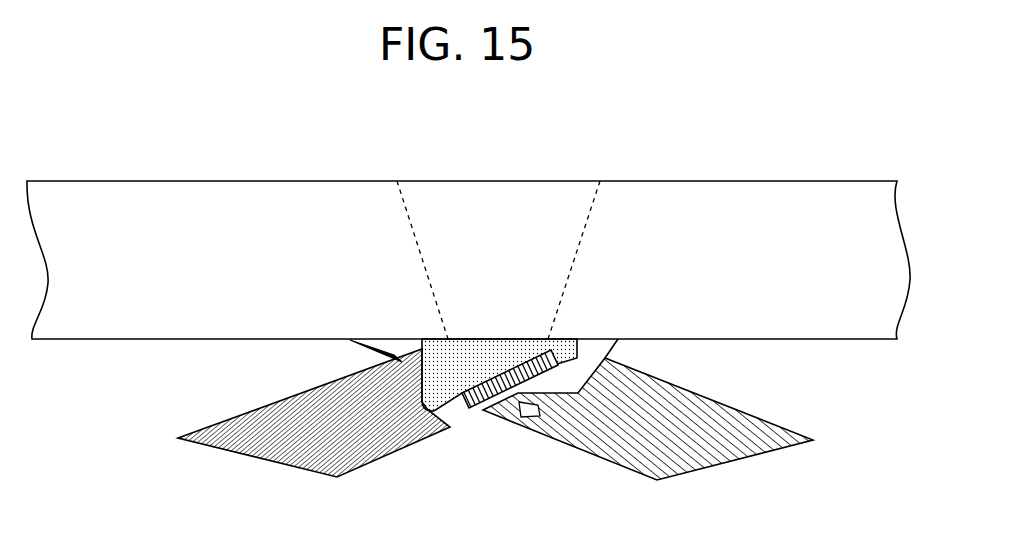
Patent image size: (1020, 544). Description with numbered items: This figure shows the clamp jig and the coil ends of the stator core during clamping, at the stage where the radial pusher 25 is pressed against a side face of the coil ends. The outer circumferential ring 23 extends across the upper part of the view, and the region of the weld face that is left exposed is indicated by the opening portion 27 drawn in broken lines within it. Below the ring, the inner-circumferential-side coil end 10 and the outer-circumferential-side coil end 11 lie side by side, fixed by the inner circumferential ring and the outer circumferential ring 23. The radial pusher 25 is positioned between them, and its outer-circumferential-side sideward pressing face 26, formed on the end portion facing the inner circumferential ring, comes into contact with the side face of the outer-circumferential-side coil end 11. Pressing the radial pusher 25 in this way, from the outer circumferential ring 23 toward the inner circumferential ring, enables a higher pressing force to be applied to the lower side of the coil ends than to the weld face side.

The inner-circumferential-side coil end 10 is at (655, 428).
The outer-circumferential-side coil end 11 is at (240, 433).
The outer circumferential ring 23 is at (656, 182).
The radial pusher 25 is at (440, 405).
The outer-circumferential-side sideward pressing face 26 is at (485, 405).
The opening portion 27 is at (502, 210).